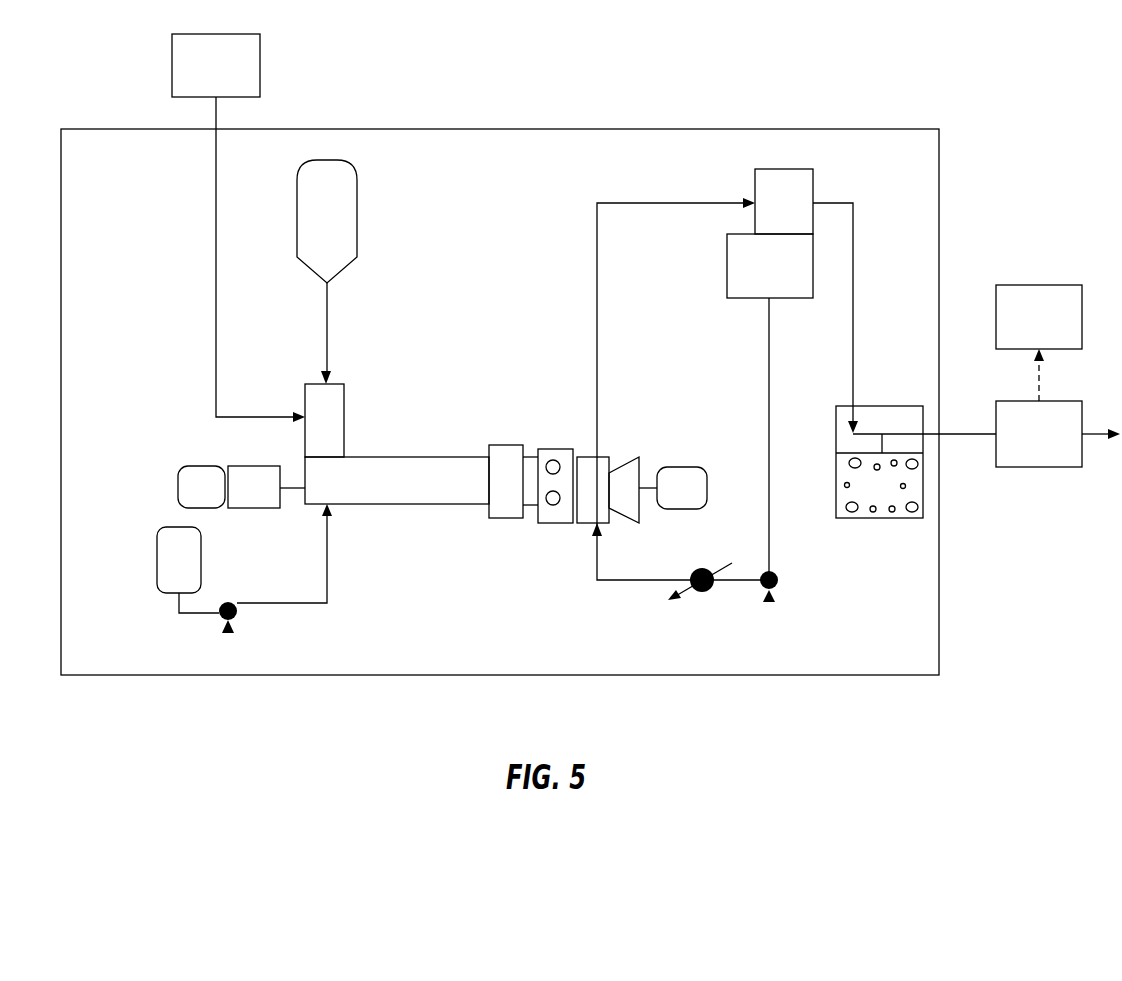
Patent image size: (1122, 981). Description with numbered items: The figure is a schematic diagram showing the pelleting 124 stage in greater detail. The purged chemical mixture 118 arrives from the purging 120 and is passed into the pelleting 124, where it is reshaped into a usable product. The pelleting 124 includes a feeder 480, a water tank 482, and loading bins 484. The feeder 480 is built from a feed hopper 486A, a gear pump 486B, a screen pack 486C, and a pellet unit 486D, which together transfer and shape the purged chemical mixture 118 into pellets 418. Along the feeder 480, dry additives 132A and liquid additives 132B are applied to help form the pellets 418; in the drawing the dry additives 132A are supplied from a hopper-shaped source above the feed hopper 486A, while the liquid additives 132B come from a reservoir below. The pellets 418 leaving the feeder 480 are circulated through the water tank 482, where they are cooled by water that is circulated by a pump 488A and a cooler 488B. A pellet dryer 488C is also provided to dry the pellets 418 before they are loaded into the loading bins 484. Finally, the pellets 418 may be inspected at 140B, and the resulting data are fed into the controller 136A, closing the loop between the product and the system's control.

The pelleting 124 is at (780, 114).
The purging 120 is at (234, 78).
The purged chemical mixture 118 is at (216, 213).
The dry additives 132A is at (351, 231).
The liquid additives 132B is at (157, 558).
The feeder 480 is at (414, 535).
The feed hopper 486A is at (345, 420).
The gear pump 486B is at (505, 518).
The screen pack 486C is at (555, 449).
The pellet unit 486D is at (680, 467).
The pellets 418 is at (597, 240).
The pellet dryer 488C is at (809, 217).
The water tank 482 is at (788, 281).
The cooler 488B is at (703, 593).
The pump 488A is at (779, 583).
The loading bins 484 is at (899, 499).
The controller 136A is at (1063, 332).
The inspection 140B is at (1063, 449).